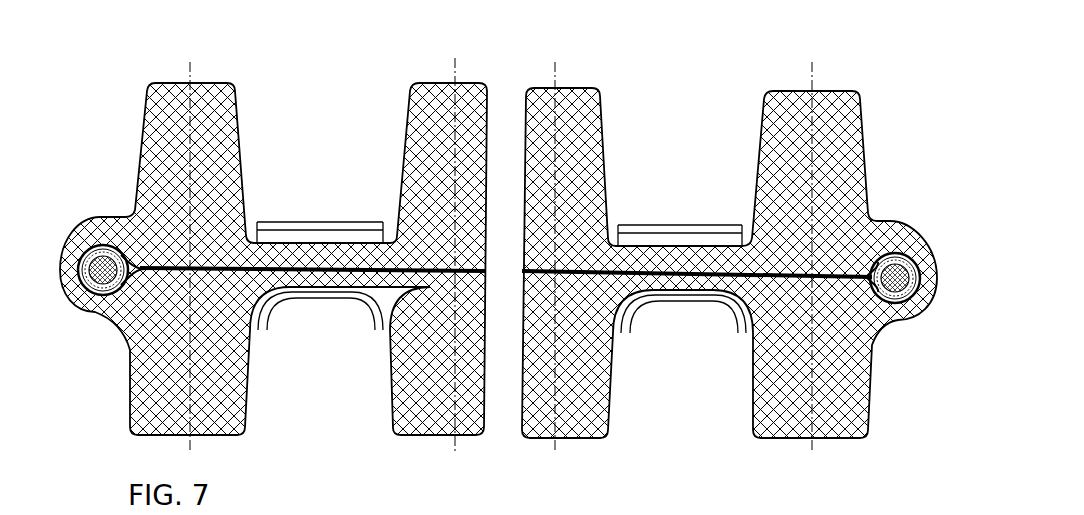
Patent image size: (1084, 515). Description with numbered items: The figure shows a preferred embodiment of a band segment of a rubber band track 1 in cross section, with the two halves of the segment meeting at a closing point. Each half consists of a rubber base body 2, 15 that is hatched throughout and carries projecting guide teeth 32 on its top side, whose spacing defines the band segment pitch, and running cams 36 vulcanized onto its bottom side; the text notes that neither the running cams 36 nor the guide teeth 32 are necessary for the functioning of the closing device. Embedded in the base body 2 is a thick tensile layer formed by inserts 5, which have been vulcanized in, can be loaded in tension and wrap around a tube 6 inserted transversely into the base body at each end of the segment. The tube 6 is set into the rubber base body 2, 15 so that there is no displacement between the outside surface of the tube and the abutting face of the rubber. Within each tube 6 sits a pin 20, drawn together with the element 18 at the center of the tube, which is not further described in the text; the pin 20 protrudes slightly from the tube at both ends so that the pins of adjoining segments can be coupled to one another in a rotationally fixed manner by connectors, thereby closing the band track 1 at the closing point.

The rubber band track 1 is at (634, 72).
The rubber base body 2 is at (540, 231).
The inserts 5 is at (522, 284).
The tube 6 is at (90, 307).
The rubber base body 15 is at (302, 222).
The cable 18 is at (113, 298).
The pin 20 is at (75, 247).
The guide teeth 32 is at (236, 85).
The running cams 36 is at (393, 398).